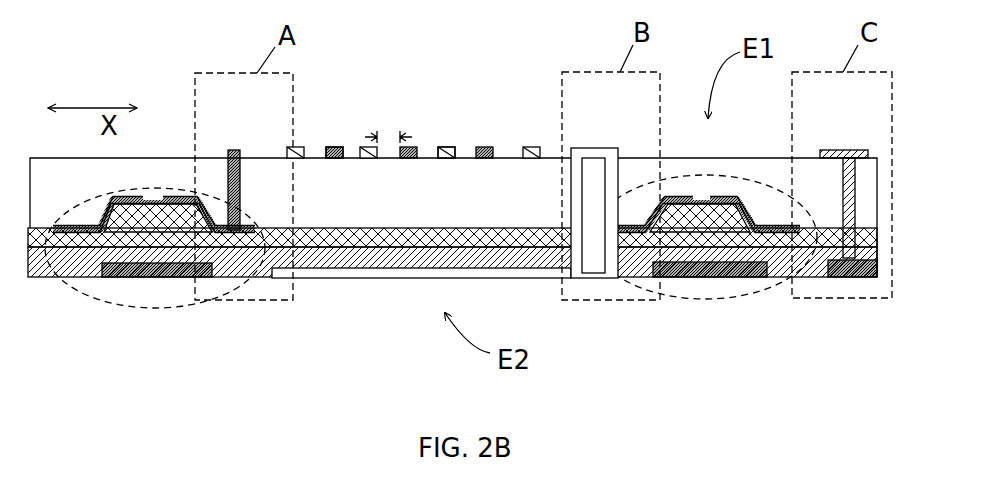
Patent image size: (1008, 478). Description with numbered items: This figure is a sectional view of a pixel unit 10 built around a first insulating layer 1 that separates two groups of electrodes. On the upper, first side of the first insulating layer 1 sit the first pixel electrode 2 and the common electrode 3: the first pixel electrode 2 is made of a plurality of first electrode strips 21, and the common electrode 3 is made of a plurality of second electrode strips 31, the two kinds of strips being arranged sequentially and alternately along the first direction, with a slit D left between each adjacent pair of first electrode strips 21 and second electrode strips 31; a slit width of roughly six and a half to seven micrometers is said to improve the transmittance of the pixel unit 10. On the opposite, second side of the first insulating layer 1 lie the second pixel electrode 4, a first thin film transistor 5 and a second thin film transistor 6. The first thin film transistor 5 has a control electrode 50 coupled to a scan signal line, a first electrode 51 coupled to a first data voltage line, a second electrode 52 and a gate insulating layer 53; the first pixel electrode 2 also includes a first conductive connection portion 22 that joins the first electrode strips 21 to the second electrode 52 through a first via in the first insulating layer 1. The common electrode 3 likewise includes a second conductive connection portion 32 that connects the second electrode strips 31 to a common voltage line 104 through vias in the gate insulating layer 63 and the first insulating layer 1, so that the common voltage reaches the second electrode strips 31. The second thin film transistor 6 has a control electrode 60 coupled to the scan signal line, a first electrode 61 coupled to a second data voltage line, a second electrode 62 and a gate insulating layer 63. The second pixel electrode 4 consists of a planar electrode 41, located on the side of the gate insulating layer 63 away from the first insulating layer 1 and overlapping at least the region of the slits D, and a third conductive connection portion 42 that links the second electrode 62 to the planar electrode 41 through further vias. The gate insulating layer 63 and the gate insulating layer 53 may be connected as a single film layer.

The pixel unit 10 is at (68, 34).
The first insulating layer 1 is at (515, 170).
The first pixel electrode 2 is at (340, 100).
The first electrode strips 21 is at (334, 148).
The common electrode 3 is at (457, 100).
The second electrode strips 31 is at (447, 148).
The slit D is at (388, 122).
The second pixel electrode 4 is at (452, 319).
The planar electrode 41 is at (367, 280).
The third conductive connection portion 42 is at (590, 148).
The first thin film transistor 5 is at (125, 310).
The control electrode 50 is at (163, 280).
The first electrode 51 is at (68, 232).
The second electrode 52 is at (215, 238).
The gate insulating layer 53 is at (90, 236).
The second thin film transistor 6 is at (678, 297).
The control electrode 60 is at (732, 278).
The first electrode 61 is at (780, 235).
The second electrode 62 is at (622, 232).
The gate insulating layer 63 is at (645, 232).
The first conductive connection portion 22 is at (251, 176).
The second conductive connection portion 32 is at (845, 190).
The common voltage line 104 is at (836, 278).